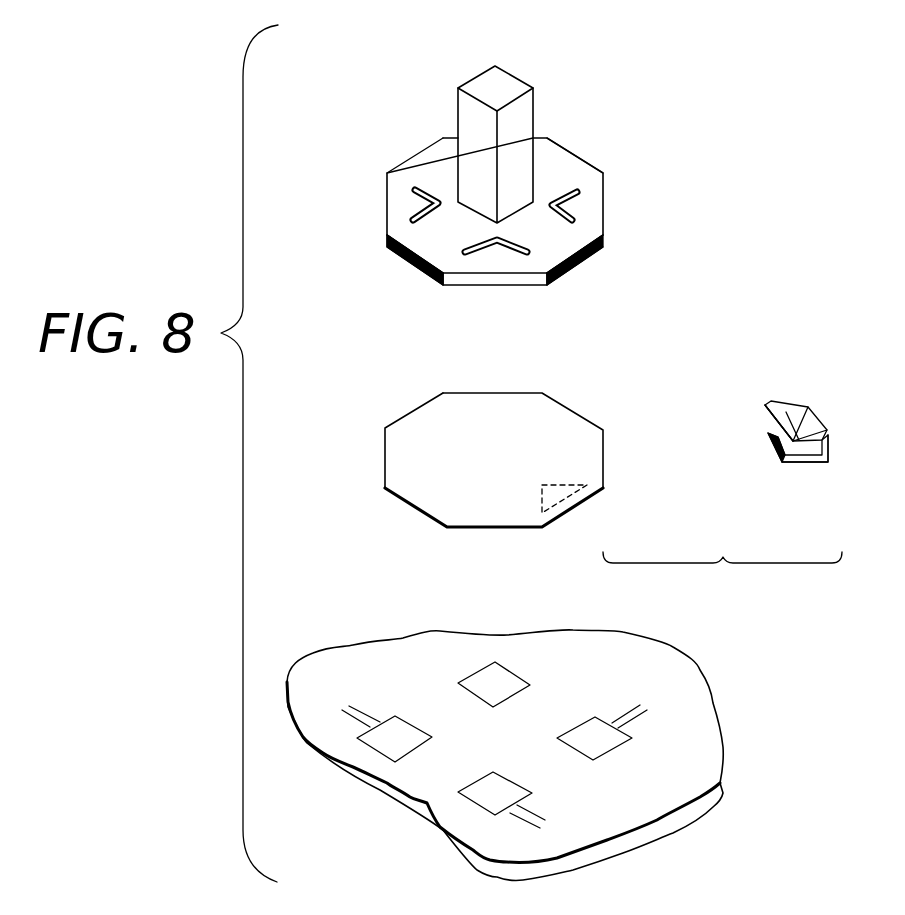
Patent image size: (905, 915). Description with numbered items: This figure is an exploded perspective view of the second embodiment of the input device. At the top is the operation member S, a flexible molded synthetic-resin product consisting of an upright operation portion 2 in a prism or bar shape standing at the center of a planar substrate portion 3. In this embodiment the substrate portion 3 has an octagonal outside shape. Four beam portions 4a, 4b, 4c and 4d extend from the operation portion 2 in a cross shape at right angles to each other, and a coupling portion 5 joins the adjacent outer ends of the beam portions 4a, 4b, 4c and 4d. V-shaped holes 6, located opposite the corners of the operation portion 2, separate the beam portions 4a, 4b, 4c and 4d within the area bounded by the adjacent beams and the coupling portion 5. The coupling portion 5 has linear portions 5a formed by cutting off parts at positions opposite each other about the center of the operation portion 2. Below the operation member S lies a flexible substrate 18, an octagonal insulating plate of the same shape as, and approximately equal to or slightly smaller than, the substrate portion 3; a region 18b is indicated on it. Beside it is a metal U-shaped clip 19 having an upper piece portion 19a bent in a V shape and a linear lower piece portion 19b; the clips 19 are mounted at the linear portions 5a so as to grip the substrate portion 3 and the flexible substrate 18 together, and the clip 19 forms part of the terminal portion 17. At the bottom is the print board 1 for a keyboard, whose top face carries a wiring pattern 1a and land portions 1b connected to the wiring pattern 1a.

The print board 1 is at (692, 780).
The wiring pattern 1a is at (633, 715).
The land portions 1b is at (487, 780).
The operation portion 2 is at (513, 83).
The substrate portion 3 is at (398, 263).
The beam portion 4a is at (452, 240).
The beam portion 4b is at (547, 168).
The beam portion 4c is at (543, 235).
The beam portion 4d is at (433, 155).
The coupling portion 5 is at (398, 208).
The linear portions 5a is at (385, 228).
The V-shaped holes 6 is at (423, 188).
The operation member S is at (645, 203).
The terminal portion 17 is at (722, 577).
The flexible substrate 18 is at (572, 423).
The cut portion 18b is at (583, 503).
The U-shaped clips 19 is at (825, 410).
The upper piece portion 19a is at (782, 420).
The lower piece portion 19b is at (803, 465).